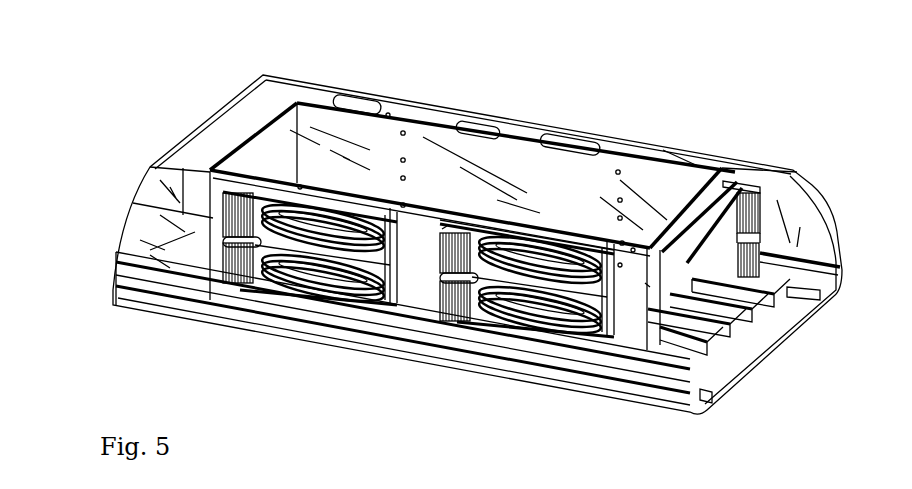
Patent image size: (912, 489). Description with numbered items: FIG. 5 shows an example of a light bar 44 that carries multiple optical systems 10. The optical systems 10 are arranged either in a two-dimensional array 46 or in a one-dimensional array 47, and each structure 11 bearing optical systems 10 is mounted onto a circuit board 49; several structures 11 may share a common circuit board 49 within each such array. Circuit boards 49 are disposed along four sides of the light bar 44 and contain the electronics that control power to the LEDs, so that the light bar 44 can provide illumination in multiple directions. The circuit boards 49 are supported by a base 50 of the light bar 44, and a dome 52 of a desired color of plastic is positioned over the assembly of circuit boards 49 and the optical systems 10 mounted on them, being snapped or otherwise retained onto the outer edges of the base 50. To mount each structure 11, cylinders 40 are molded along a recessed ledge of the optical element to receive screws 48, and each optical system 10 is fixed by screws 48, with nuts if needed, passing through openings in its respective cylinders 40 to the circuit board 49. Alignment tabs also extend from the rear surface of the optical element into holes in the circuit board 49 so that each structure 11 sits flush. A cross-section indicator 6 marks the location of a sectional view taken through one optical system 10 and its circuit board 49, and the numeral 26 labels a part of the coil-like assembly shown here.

The optical system 10 is at (233, 147).
The dome 52 is at (150, 220).
The light bar 44 is at (428, 365).
The base 50 is at (780, 348).
The one-dimensional array 47 is at (690, 213).
The structure 11 is at (397, 318).
The two-dimensional array 46 is at (487, 222).
The cylinder 40 is at (577, 258).
The screw 48 is at (545, 300).
The coil 26 is at (530, 293).
The circuit board 49 is at (388, 113).
The section indicator 6 is at (441, 234).